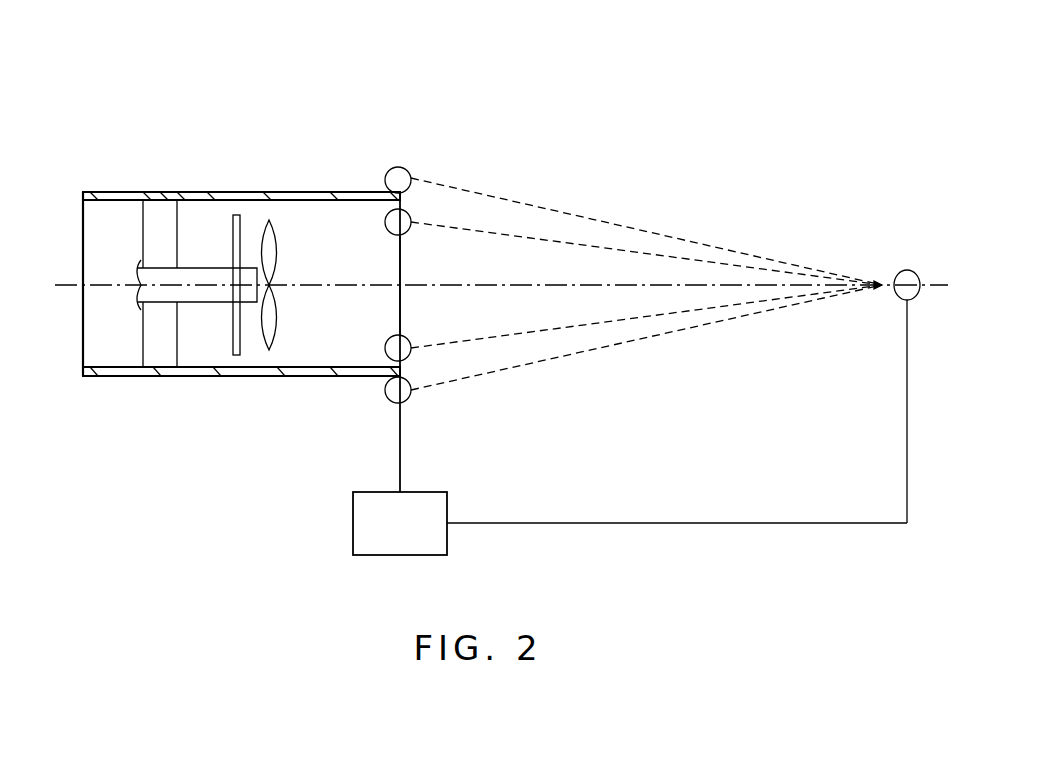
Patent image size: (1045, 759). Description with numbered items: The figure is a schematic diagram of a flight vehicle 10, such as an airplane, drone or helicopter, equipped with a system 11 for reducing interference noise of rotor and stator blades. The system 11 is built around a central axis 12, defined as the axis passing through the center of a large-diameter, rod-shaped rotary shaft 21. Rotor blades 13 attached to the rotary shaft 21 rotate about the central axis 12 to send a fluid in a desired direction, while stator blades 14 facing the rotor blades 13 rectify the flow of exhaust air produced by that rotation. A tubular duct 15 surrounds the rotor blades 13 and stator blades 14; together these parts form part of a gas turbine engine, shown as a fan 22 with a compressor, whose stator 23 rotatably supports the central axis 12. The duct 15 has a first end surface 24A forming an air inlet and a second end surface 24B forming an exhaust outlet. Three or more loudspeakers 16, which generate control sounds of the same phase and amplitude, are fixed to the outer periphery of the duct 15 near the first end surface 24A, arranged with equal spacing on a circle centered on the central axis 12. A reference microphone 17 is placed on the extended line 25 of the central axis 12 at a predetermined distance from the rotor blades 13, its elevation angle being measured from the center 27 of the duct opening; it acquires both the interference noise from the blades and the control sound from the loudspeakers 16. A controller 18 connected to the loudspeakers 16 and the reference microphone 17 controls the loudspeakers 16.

The flight vehicle 10 is at (340, 80).
The system for reducing interference noise of rotor and stator blades 11 is at (381, 115).
The central axis 12 is at (193, 288).
The rotor blades 13 is at (277, 242).
The stator blades 14 is at (233, 237).
The duct 15 is at (338, 192).
The loudspeakers 16 is at (410, 170).
The reference microphone 17 is at (907, 270).
The controller 18 is at (400, 556).
The rotary shaft 21 is at (200, 268).
The fan 22 is at (268, 188).
The stator 23 is at (160, 200).
The first end surface 24A is at (400, 255).
The second end surface 24B is at (83, 250).
The extended line of the central axis 25 is at (428, 287).
The center of an opening 27 is at (400, 285).